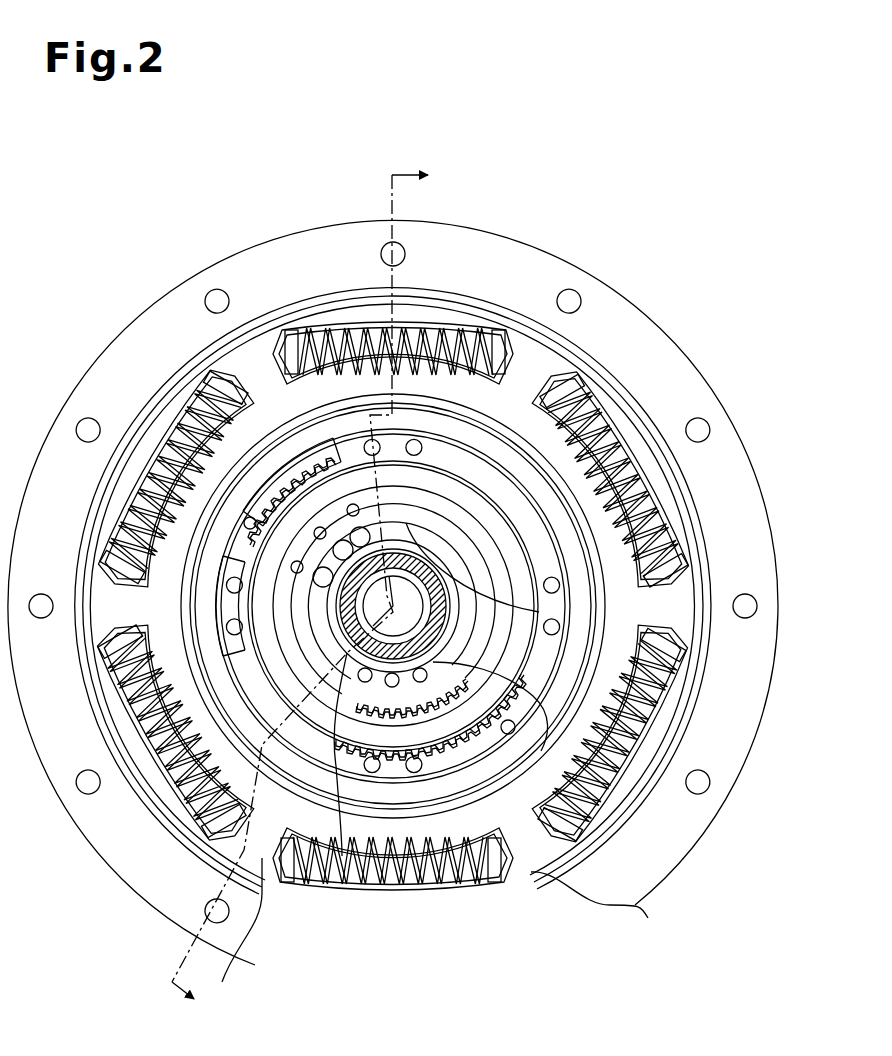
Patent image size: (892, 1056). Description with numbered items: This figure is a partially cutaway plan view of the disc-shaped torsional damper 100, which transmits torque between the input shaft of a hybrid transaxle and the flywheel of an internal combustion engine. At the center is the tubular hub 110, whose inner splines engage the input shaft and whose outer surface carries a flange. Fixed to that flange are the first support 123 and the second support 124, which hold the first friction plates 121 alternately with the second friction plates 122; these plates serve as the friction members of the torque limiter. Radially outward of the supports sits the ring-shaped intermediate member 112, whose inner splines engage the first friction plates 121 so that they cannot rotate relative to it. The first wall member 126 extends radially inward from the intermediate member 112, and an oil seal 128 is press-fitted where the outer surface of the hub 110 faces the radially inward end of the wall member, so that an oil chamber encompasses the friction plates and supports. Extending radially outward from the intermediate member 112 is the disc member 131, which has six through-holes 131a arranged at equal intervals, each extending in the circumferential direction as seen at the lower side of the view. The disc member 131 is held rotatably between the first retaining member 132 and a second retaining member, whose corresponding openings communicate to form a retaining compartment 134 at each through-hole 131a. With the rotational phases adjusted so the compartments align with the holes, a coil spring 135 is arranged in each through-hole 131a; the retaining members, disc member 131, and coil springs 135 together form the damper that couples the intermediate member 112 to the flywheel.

The torsional damper 100 is at (393, 588).
The hub 110 is at (454, 606).
The intermediate member 112 is at (374, 590).
The first friction plates 121 is at (393, 677).
The second friction plates 122 is at (394, 614).
The first support 123 is at (292, 465).
The second support 124 is at (190, 606).
The first wall member 126 is at (393, 589).
The oil seal 128 is at (383, 586).
The disc member 131 is at (70, 307).
The through-holes 131a is at (392, 643).
The first retaining member 132 is at (393, 589).
The retaining compartment 134 is at (387, 576).
The coil spring 135 is at (391, 600).